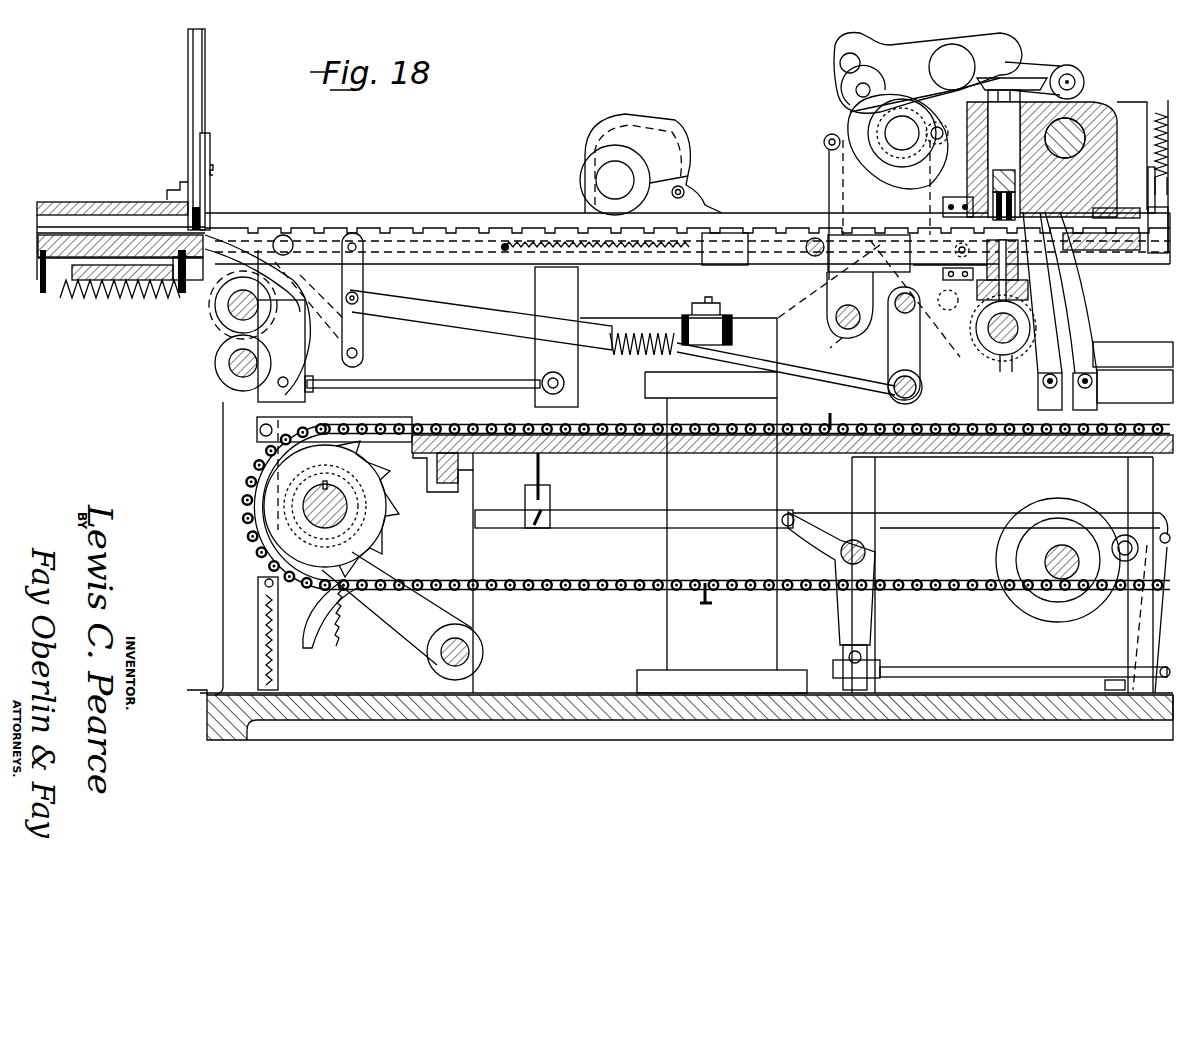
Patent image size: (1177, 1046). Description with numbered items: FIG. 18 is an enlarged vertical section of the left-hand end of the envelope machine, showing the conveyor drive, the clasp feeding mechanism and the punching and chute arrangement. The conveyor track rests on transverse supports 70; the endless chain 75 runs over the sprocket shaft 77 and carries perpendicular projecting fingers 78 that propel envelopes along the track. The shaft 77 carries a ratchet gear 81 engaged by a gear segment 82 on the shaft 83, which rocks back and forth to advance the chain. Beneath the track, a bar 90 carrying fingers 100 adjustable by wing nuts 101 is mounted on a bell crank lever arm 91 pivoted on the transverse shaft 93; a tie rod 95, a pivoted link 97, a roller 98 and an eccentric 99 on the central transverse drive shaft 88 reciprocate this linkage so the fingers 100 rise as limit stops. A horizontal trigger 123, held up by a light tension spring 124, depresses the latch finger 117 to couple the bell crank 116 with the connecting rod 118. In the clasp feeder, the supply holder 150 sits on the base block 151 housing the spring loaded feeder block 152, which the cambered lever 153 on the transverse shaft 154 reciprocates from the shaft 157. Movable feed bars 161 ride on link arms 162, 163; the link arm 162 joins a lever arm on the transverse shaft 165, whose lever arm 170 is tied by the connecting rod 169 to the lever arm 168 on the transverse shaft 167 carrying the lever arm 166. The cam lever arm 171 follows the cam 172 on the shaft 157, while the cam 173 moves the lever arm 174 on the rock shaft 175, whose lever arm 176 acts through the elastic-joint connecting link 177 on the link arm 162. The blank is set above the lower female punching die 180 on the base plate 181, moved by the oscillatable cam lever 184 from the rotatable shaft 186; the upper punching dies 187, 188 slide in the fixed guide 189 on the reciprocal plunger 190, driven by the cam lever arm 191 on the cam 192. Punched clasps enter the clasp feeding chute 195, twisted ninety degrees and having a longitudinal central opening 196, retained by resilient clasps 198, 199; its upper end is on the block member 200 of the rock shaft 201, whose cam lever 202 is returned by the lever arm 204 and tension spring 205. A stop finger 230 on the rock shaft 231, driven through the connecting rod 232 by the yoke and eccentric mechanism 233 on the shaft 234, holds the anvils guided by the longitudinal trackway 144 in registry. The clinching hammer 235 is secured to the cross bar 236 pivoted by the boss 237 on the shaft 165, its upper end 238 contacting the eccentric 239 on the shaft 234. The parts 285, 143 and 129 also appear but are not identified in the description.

The clasp blank supply holder 150 is at (190, 110).
The base block 151 is at (110, 192).
The spring loaded feeder block 152 is at (125, 236).
The movable feed bars 161 is at (466, 226).
The lever arm 170 is at (268, 232).
The connecting rod 169 is at (468, 250).
The upper end of clinching hammer 238 is at (543, 218).
The cambered lever 153 is at (290, 272).
The transverse shaft 165 is at (230, 312).
The transverse shaft 154 is at (230, 364).
The boss 237 is at (275, 397).
The link arm 162 is at (365, 277).
The elastic-joint connecting link 177 is at (602, 334).
The cross bar 236 is at (430, 378).
The bracket 285 is at (565, 290).
The yoke and eccentric mechanism 233 is at (652, 146).
The shaft 234 is at (612, 176).
The eccentric 239 is at (652, 182).
The clinching hammer 235 is at (686, 192).
The connecting rod 232 is at (760, 232).
The cam lever arm 191 is at (913, 60).
The oscillatable cam lever 184 is at (1035, 66).
The reciprocal plunger 190 is at (1070, 100).
The rotatable shaft 186 is at (1115, 110).
The upper clasp blank punching die 187 is at (990, 172).
The upper clasp blank punching die 188 is at (990, 183).
The fixed guide 189 is at (960, 200).
The shaft 157 is at (905, 133).
The cam 173 is at (862, 145).
The cam 172 is at (842, 127).
The lever arm 174 is at (947, 125).
The cam lever arm 171 is at (825, 163).
The cam 192 is at (840, 178).
The tension spring 205 is at (1157, 135).
The lever arm 204 is at (1157, 168).
The cam lever 202 is at (1148, 196).
The rock shaft 201 is at (1140, 252).
The block member 200 is at (1062, 257).
The perpendicular projecting fingers 78 is at (834, 424).
The transverse shaft 167 is at (838, 320).
The lever arm 168 is at (791, 292).
The lever arm 166 is at (860, 328).
The lever arm 176 is at (893, 359).
The rock shaft 175 is at (946, 319).
The link arm 163 is at (946, 301).
The lower female punching die 180 is at (1030, 272).
The base plate 181 is at (1030, 290).
The stop finger 230 is at (1000, 350).
The rock shaft 231 is at (1023, 381).
The clasp feeding chute 195 is at (1067, 337).
The longitudinal central opening 196 is at (1062, 350).
The resilient clasp 198 is at (1040, 400).
The resilient clasp 199 is at (1092, 393).
The longitudinal trackway 144 is at (1118, 350).
The bar 143 is at (1137, 394).
The horizontal trigger 123 is at (292, 425).
The endless chain 75 is at (352, 428).
The sprocket shaft 77 is at (335, 492).
The ratchet gear 81 is at (314, 468).
The gear segment 82 is at (415, 510).
The transverse supports 70 is at (470, 473).
The fingers 100 is at (546, 462).
The wing nuts 101 is at (545, 528).
The bar 90 is at (585, 516).
The frame 129 is at (762, 486).
The shaft 83 is at (465, 648).
The vertical latch finger 117 is at (279, 673).
The light tension spring 124 is at (262, 618).
The bell crank 116 is at (197, 690).
The horizontal connecting rod 118 is at (325, 692).
The bell crank lever arm 91 is at (823, 542).
The transverse shaft 93 is at (868, 552).
The tie rod 95 is at (958, 668).
The eccentric 99 is at (1058, 510).
The central transverse drive shaft 88 is at (1075, 560).
The roller 98 is at (1120, 535).
The pivoted link 97 is at (1148, 628).